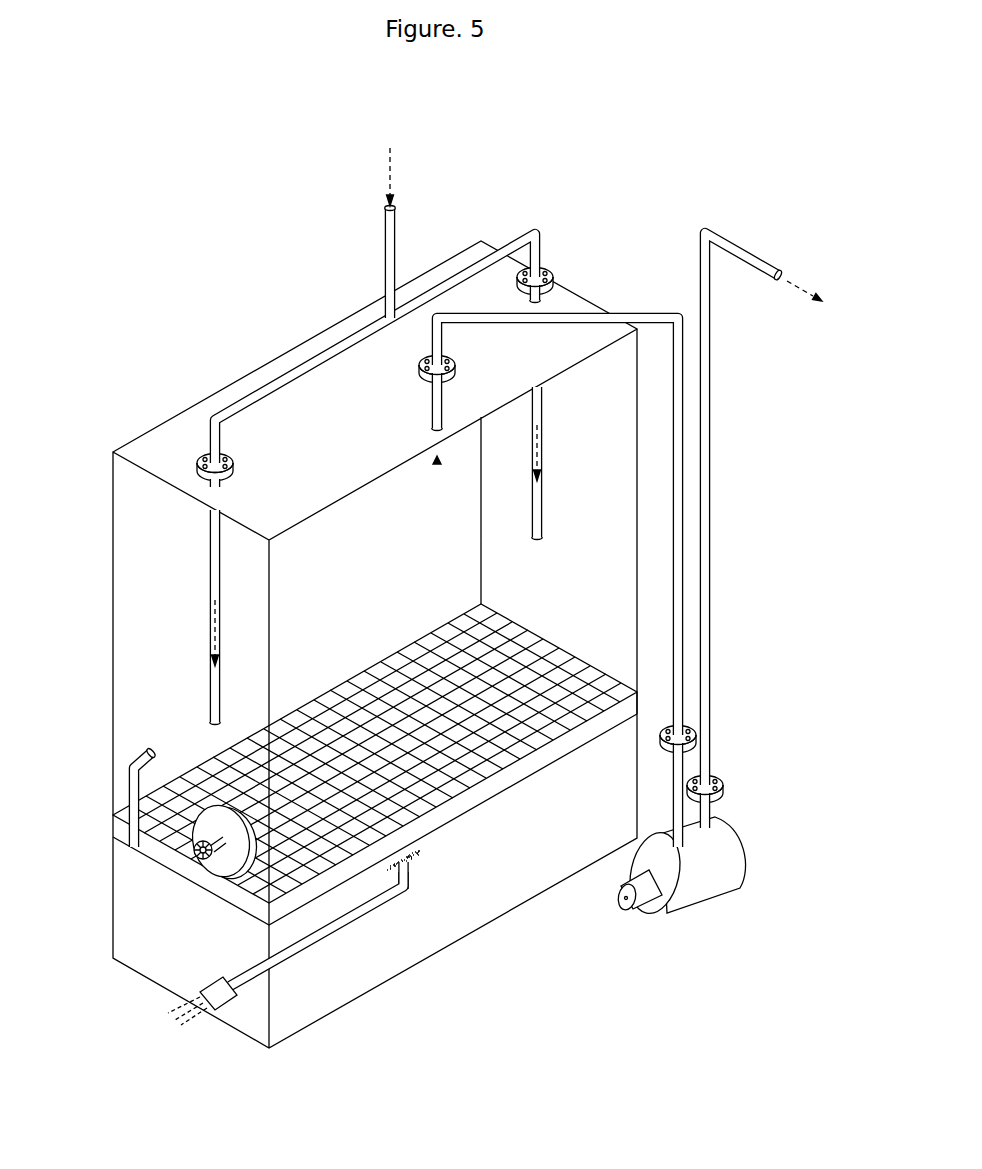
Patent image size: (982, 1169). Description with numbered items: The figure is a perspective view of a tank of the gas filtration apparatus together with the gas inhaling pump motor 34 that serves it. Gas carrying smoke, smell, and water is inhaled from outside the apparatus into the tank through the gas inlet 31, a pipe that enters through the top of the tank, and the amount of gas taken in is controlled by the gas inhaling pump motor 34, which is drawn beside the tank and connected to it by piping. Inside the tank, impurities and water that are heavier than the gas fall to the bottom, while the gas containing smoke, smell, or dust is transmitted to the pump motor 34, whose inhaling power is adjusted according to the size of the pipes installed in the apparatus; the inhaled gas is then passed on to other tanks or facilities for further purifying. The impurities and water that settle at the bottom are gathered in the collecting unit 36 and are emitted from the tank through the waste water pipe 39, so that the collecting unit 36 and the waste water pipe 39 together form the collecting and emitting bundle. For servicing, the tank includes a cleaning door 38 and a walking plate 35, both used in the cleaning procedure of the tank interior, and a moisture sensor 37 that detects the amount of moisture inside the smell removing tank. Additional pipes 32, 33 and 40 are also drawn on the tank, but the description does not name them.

The gas inlet 31 is at (385, 252).
The supply pipe 32 is at (545, 507).
The discharge pipe 33 is at (710, 522).
The gas inhaling pump motor 34 is at (710, 880).
The walking plate 35 is at (460, 797).
The collecting unit 36 is at (418, 866).
The moisture sensor 37 is at (135, 783).
The cleaning door 38 is at (226, 862).
The waste water pipe 39 is at (220, 1005).
The circulation pipe 40 is at (610, 322).